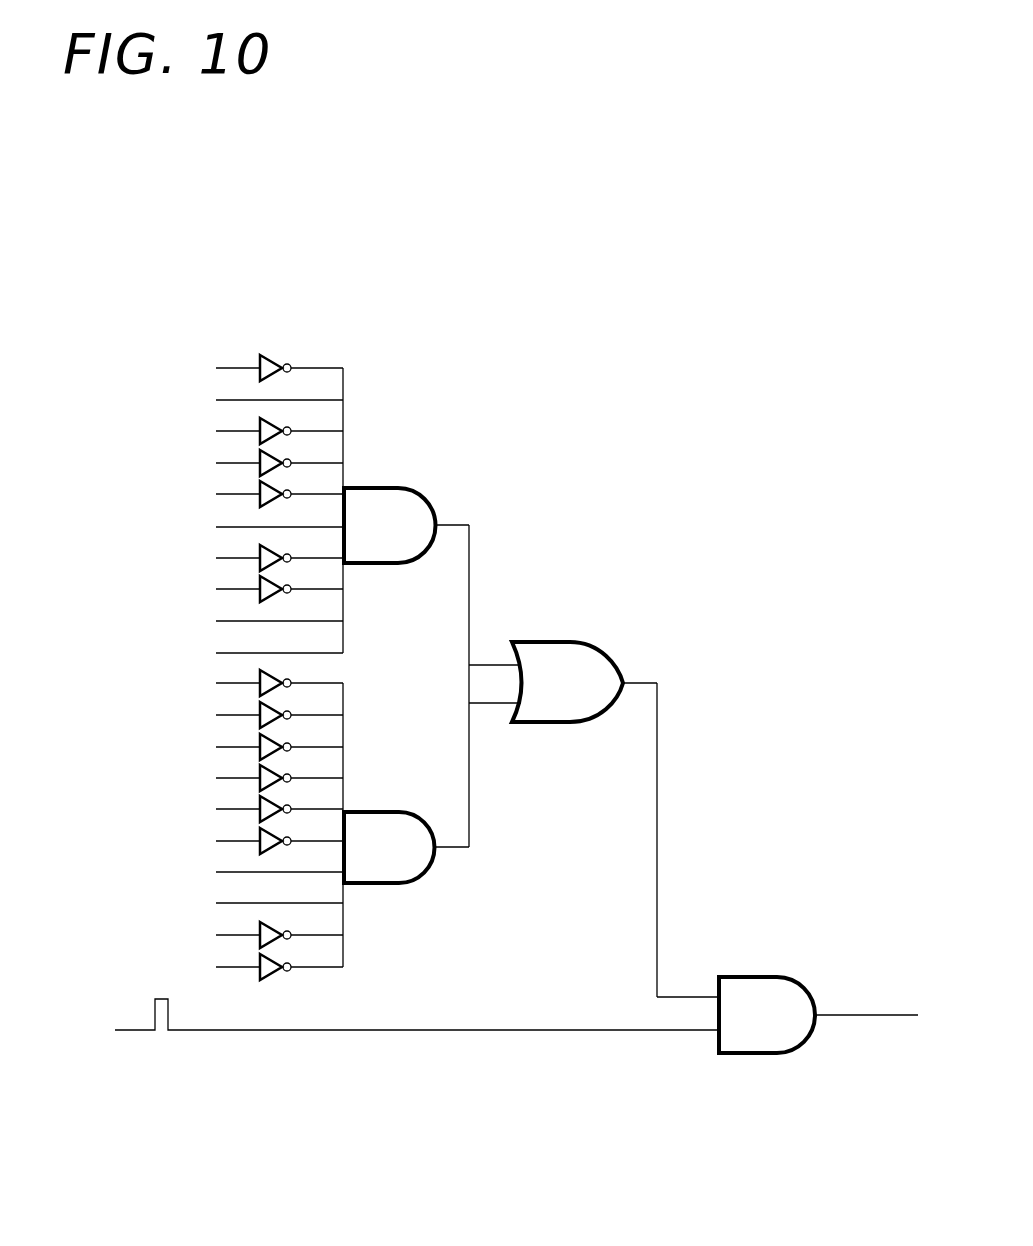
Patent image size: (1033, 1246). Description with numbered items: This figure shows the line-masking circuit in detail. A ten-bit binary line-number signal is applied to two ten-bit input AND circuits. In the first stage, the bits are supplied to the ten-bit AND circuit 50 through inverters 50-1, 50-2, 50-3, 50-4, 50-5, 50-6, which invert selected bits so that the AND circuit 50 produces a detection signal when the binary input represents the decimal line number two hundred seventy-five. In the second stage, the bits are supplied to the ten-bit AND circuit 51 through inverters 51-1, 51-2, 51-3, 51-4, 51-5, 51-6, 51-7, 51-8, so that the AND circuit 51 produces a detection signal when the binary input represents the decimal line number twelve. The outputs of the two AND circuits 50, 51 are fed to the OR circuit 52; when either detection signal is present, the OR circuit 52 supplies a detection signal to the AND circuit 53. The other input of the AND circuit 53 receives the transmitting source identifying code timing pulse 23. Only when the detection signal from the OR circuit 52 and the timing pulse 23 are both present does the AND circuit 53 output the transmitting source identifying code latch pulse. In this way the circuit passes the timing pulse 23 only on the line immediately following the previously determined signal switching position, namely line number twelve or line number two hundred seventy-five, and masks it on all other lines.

The inverter 50-1 is at (258, 362).
The inverter 50-2 is at (258, 425).
The inverter 50-3 is at (258, 457).
The inverter 50-4 is at (258, 488).
The inverter 50-5 is at (258, 552).
The inverter 50-6 is at (258, 583).
The inverter 51-1 is at (258, 677).
The inverter 51-2 is at (258, 709).
The inverter 51-3 is at (258, 741).
The inverter 51-4 is at (258, 772).
The inverter 51-5 is at (258, 803).
The inverter 51-6 is at (258, 835).
The inverter 51-7 is at (258, 929).
The inverter 51-8 is at (258, 961).
The 10-bit AND circuit 50 is at (410, 487).
The 10-bit AND circuit 51 is at (402, 811).
The OR circuit 52 is at (577, 641).
The AND circuit 53 is at (787, 976).
The transmitting source identifying code timing pulse 23 is at (130, 1014).